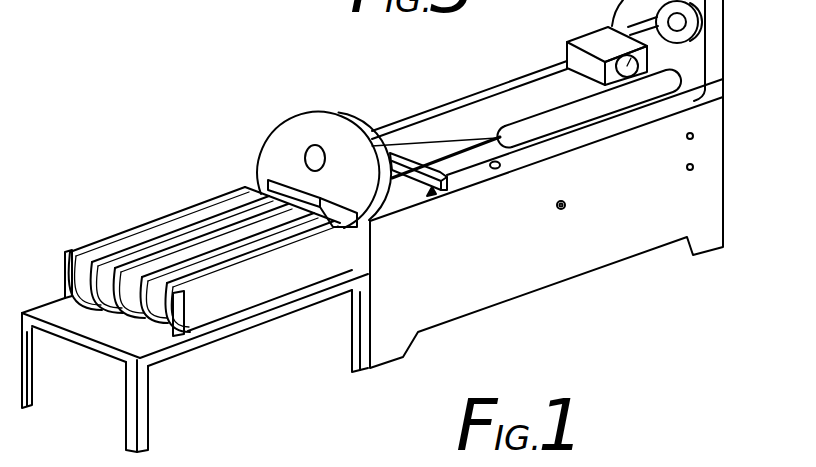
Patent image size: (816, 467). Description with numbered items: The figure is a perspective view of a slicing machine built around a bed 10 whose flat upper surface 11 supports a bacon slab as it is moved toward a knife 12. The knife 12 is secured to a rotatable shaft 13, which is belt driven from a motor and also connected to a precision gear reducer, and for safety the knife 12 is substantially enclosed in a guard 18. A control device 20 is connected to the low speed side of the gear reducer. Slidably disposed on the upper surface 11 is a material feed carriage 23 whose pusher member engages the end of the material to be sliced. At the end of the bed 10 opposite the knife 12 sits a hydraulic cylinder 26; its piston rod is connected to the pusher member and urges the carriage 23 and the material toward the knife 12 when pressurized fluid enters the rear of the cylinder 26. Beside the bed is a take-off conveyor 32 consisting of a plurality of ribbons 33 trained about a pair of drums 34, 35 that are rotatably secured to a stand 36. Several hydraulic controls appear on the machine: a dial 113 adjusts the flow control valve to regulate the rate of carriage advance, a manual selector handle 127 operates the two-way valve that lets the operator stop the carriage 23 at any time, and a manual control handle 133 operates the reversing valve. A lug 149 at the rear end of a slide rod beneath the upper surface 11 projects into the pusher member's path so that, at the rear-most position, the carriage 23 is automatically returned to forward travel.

The bed 10 is at (487, 218).
The upper surface 11 is at (418, 181).
The knife 12 is at (358, 192).
The rotatable shaft 13 is at (498, 80).
The guard 18 is at (303, 112).
The control device 20 is at (586, 27).
The material feed carriage 23 is at (432, 188).
The hydraulic cylinder 26 is at (707, 90).
The take-off conveyor 32 is at (138, 229).
The ribbons 33 is at (200, 242).
The drum 34 is at (250, 188).
The drum 35 is at (72, 250).
The stand 36 is at (195, 361).
The dial 113 is at (560, 209).
The manual selector handle 127 is at (686, 166).
The manual control handle 133 is at (686, 134).
The lug 149 is at (499, 168).